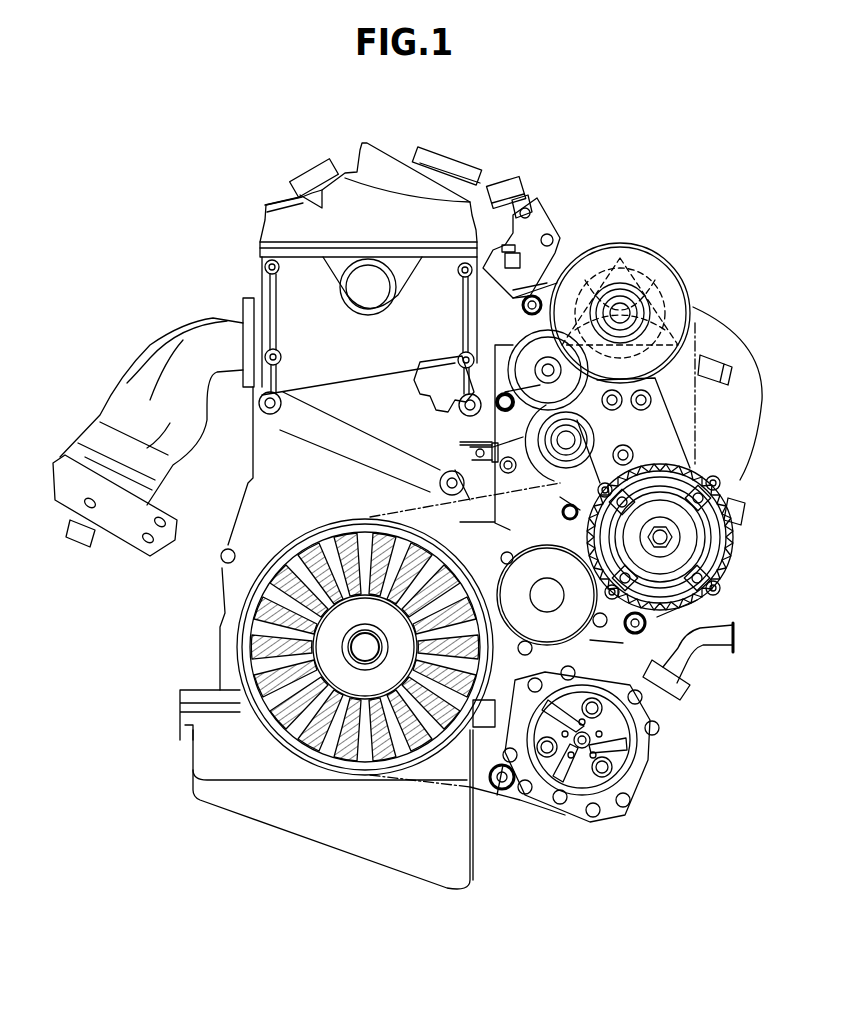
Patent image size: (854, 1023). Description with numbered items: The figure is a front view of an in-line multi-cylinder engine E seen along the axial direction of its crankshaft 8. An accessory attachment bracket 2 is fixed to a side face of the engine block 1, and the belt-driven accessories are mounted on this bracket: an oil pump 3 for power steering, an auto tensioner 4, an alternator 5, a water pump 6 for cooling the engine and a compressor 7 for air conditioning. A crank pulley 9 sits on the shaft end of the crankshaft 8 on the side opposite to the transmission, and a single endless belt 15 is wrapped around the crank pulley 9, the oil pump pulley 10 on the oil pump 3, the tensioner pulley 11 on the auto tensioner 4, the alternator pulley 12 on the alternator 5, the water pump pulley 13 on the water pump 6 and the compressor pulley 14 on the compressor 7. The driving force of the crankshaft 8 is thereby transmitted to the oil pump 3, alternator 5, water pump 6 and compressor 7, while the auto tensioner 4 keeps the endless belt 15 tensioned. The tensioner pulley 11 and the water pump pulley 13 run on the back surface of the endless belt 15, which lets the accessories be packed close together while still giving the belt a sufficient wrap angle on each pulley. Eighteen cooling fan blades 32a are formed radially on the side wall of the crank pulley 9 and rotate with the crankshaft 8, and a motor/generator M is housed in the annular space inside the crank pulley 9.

The engine E is at (190, 262).
The motor/generator M is at (232, 637).
The engine block 1 is at (247, 455).
The accessory attachment bracket 2 is at (635, 436).
The oil pump 3 is at (660, 280).
The auto tensioner 4 is at (516, 336).
The alternator 5 is at (697, 465).
The water pump 6 is at (540, 568).
The compressor 7 is at (535, 810).
The crankshaft 8 is at (358, 648).
The crank pulley 9 is at (428, 765).
The oil pump pulley 10 is at (633, 265).
The tensioner pulley 11 is at (470, 447).
The alternator pulley 12 is at (690, 545).
The water pump pulley 13 is at (563, 648).
The compressor pulley 14 is at (625, 764).
The endless belt 15 is at (415, 480).
The cooling fan blades 32a is at (346, 548).